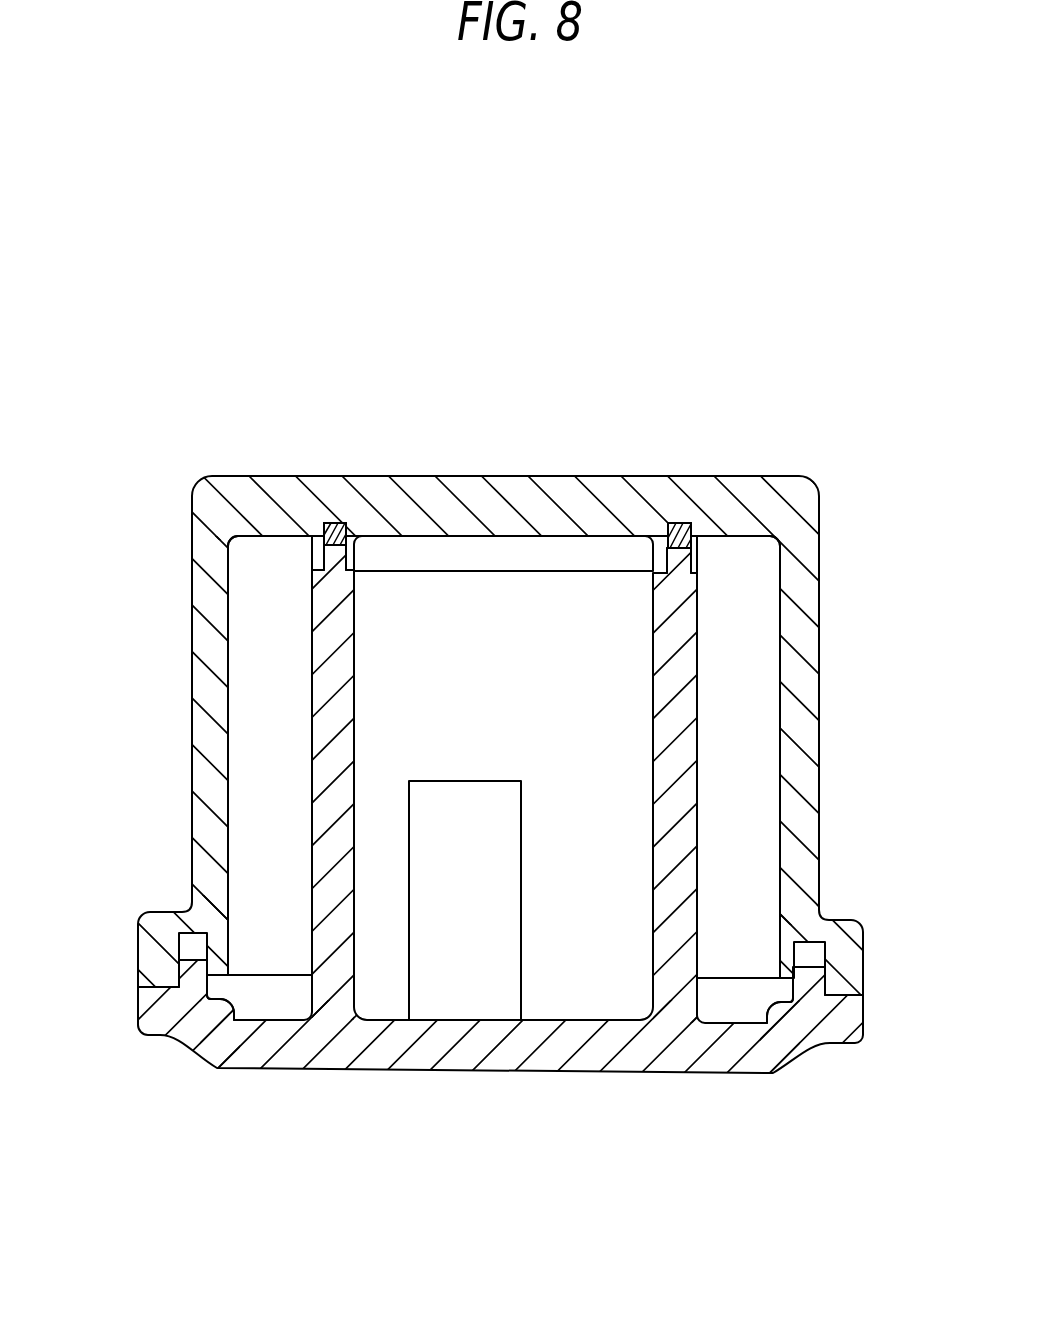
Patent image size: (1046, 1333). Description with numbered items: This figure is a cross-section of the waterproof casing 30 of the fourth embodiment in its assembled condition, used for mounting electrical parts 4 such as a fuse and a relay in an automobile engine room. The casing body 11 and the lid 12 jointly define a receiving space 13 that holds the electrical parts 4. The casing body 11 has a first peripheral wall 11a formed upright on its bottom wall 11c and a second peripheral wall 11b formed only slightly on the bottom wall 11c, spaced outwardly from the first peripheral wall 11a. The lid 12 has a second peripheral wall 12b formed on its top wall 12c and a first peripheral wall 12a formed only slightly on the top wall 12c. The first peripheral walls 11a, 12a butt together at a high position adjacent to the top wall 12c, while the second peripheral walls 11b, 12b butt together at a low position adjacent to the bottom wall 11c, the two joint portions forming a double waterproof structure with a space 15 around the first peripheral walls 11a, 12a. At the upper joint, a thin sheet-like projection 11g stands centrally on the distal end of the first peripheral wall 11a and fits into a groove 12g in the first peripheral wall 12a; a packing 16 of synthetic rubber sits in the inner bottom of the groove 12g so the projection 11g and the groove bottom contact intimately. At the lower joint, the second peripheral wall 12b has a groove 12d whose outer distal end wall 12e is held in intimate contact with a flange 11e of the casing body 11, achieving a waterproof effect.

The waterproof casing 30 is at (485, 348).
The lid 12 is at (523, 675).
The first peripheral wall 12a is at (283, 548).
The second peripheral wall 12b is at (200, 683).
The top wall 12c is at (458, 490).
The groove 12d is at (158, 915).
The outer distal end wall 12e is at (190, 955).
The groove 12g is at (676, 560).
The casing body 11 is at (523, 788).
The first peripheral wall 11a is at (325, 770).
The second peripheral wall 11b is at (237, 1007).
The bottom wall 11c is at (450, 1057).
The flange 11e is at (140, 1020).
The projection 11g is at (657, 560).
The receiving space 13 is at (533, 590).
The space 15 is at (262, 612).
The packing 16 is at (330, 522).
The electrical parts 4 is at (517, 960).